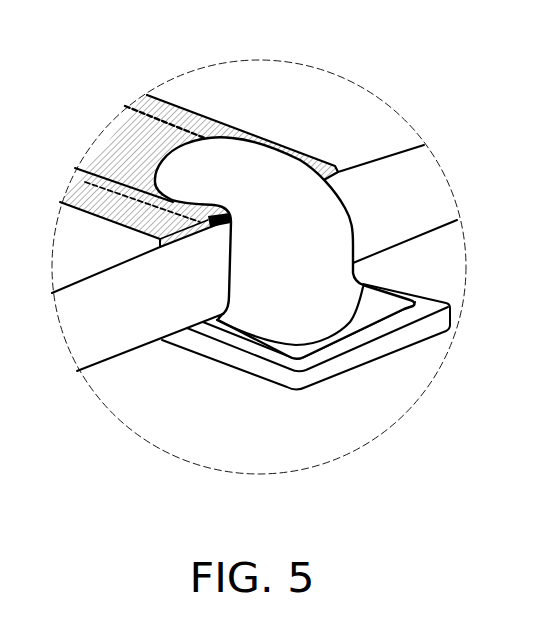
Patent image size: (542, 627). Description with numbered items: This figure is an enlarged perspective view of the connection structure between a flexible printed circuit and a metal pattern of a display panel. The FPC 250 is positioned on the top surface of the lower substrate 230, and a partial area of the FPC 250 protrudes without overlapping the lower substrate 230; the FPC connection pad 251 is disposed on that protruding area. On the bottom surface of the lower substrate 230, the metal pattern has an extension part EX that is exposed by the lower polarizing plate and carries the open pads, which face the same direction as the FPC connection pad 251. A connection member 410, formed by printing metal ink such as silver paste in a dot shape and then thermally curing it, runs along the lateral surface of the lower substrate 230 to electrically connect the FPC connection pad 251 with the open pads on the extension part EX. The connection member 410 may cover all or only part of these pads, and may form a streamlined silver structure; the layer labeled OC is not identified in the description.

The over-coat layer OC is at (199, 124).
The extension part EX is at (90, 186).
The connection member 410 is at (251, 165).
The lower substrate 230 is at (414, 193).
The FPC 250 is at (444, 265).
The FPC connection pad 251 is at (300, 345).